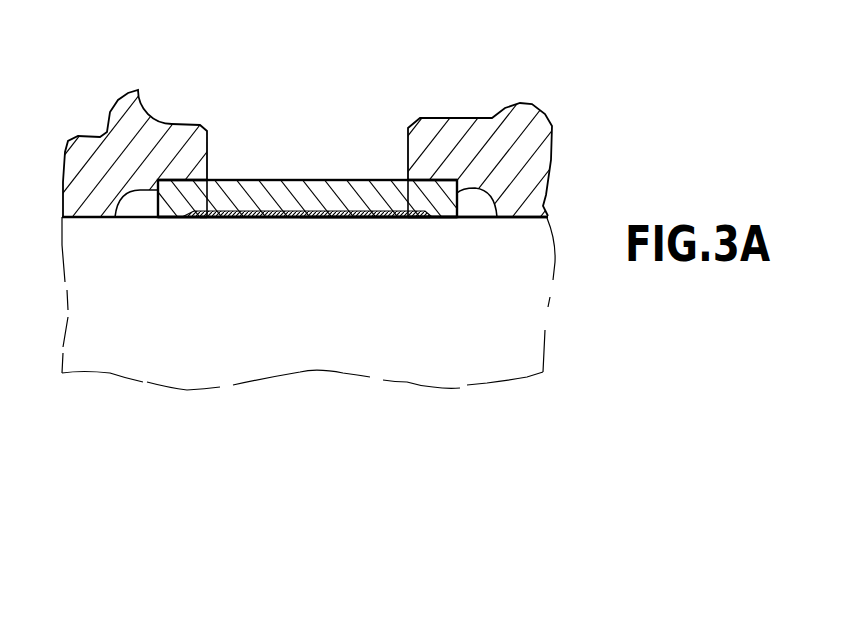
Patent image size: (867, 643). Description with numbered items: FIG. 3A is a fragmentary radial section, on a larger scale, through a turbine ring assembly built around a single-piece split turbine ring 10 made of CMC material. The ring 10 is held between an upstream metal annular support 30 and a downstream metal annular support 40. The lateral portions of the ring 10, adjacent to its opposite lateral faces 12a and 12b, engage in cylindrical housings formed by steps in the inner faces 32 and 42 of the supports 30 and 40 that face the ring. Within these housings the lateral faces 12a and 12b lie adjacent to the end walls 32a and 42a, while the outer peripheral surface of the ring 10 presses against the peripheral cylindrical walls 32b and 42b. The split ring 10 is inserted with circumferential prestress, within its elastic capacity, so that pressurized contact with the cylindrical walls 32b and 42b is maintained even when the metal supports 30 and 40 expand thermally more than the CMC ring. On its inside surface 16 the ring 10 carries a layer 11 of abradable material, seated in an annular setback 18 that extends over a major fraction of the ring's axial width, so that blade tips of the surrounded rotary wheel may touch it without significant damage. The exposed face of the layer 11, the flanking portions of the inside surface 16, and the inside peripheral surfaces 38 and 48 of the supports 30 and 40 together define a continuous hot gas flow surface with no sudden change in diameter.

The split turbine ring 10 is at (280, 183).
The layer of abradable material 11 is at (353, 218).
The lateral face 12a is at (122, 218).
The lateral face 12b is at (490, 218).
The inside surface 16 is at (177, 218).
The annular setback 18 is at (277, 218).
The upstream metal annular support 30 is at (107, 157).
The inner face 32 is at (209, 133).
The end wall 32a is at (165, 218).
The peripheral cylindrical wall 32b is at (175, 200).
The inside peripheral surface 38 is at (81, 218).
The downstream metal annular support 40 is at (520, 143).
The inner face 42 is at (408, 143).
The end wall 42a is at (447, 218).
The peripheral cylindrical wall 42b is at (442, 193).
The inside peripheral surface 48 is at (531, 218).